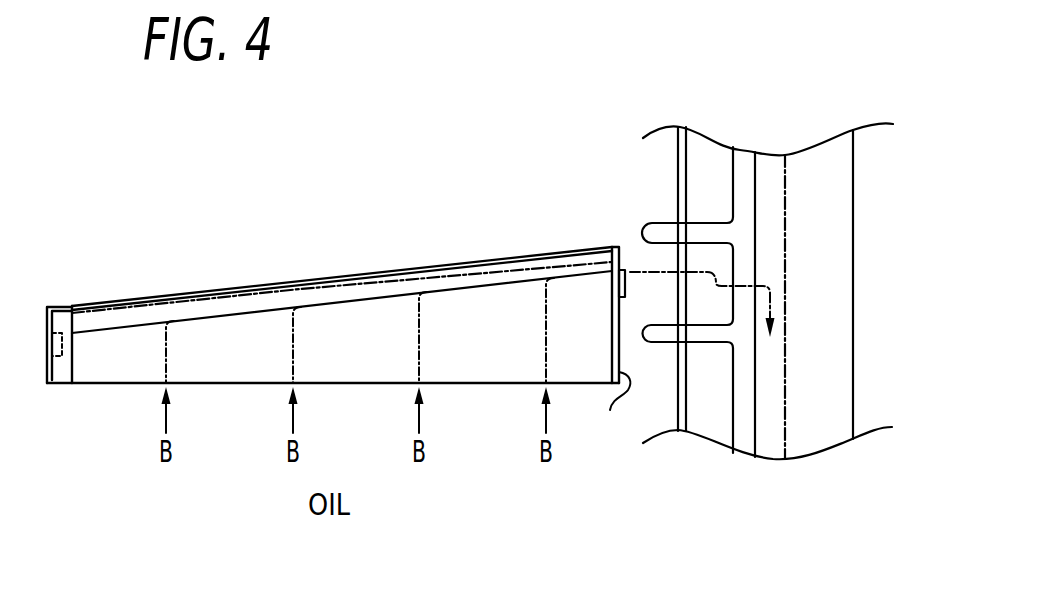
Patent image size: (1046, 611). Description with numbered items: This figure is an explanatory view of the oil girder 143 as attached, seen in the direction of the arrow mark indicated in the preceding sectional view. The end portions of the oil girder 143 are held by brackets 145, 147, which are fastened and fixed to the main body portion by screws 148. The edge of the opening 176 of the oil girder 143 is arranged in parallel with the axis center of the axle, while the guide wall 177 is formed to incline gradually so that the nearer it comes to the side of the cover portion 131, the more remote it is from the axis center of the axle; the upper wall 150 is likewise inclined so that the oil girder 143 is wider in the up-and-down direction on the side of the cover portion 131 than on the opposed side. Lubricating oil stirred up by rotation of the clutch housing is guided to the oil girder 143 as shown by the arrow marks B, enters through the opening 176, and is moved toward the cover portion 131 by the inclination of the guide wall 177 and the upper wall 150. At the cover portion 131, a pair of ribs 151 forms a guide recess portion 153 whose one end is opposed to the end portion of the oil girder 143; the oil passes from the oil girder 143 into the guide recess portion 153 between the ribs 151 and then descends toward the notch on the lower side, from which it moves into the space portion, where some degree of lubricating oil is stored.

The cover portion 131 is at (807, 150).
The oil girder 143 is at (510, 248).
The bracket 145 is at (47, 310).
The bracket 147 is at (610, 405).
The screw 148 is at (57, 333).
The upper wall 150 is at (352, 388).
The rib 151 is at (667, 253).
The guide recess portion 153 is at (640, 220).
The opening 176 is at (479, 388).
The guide wall 177 is at (406, 268).